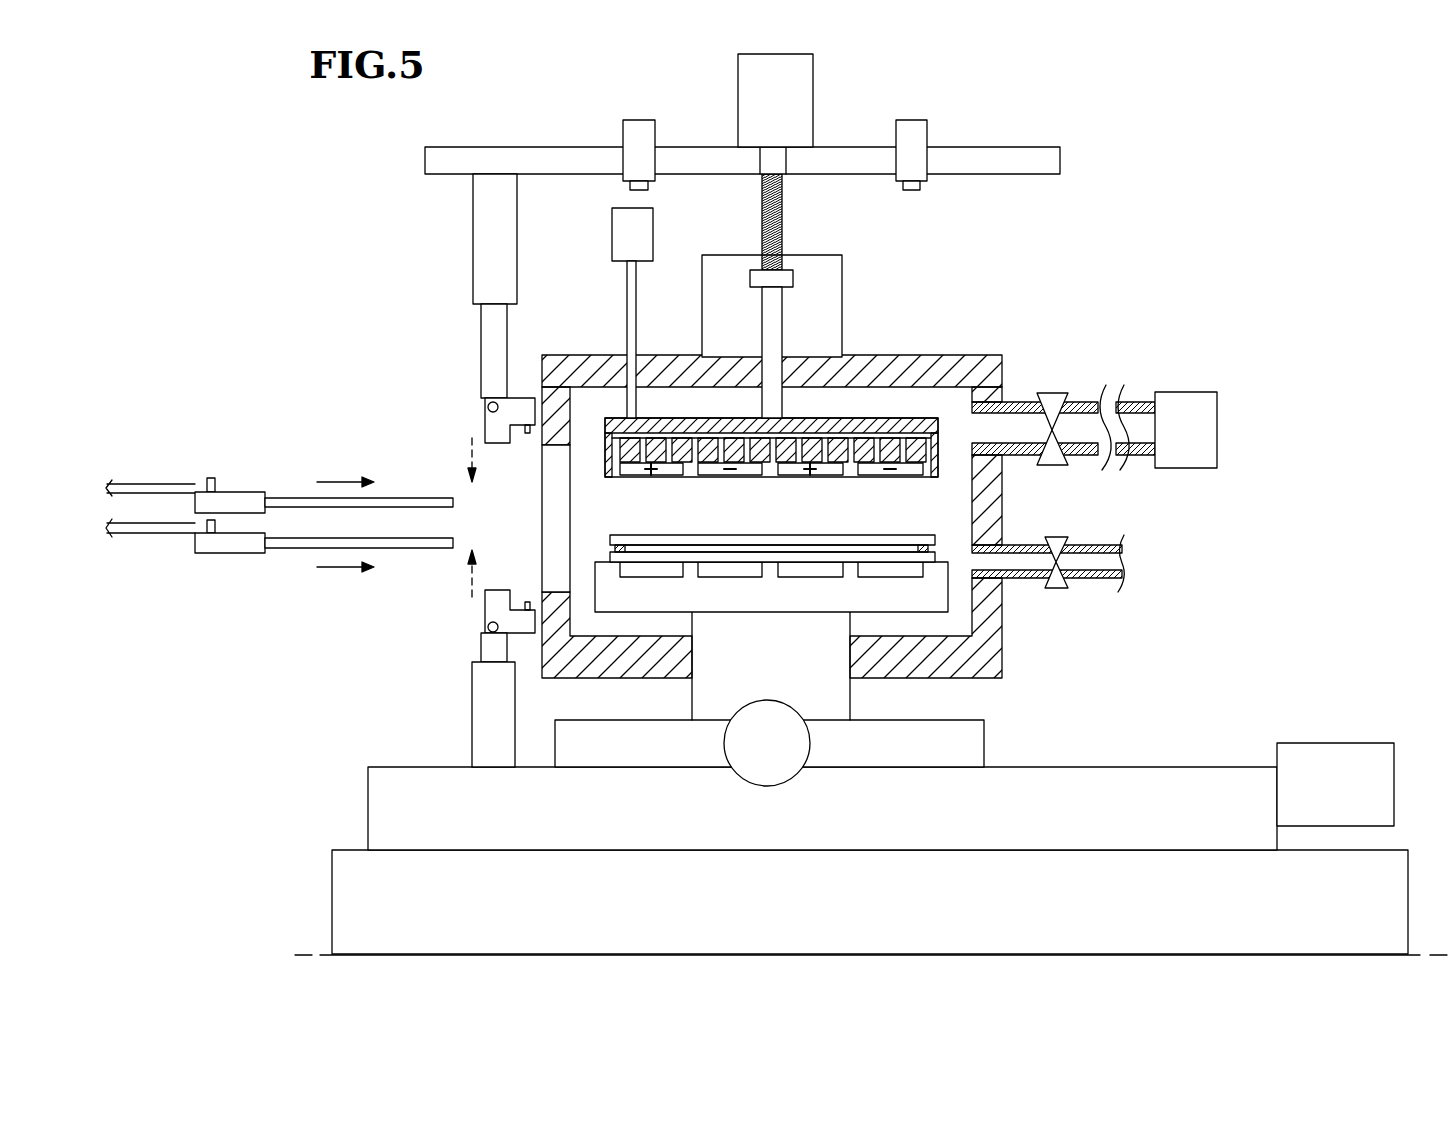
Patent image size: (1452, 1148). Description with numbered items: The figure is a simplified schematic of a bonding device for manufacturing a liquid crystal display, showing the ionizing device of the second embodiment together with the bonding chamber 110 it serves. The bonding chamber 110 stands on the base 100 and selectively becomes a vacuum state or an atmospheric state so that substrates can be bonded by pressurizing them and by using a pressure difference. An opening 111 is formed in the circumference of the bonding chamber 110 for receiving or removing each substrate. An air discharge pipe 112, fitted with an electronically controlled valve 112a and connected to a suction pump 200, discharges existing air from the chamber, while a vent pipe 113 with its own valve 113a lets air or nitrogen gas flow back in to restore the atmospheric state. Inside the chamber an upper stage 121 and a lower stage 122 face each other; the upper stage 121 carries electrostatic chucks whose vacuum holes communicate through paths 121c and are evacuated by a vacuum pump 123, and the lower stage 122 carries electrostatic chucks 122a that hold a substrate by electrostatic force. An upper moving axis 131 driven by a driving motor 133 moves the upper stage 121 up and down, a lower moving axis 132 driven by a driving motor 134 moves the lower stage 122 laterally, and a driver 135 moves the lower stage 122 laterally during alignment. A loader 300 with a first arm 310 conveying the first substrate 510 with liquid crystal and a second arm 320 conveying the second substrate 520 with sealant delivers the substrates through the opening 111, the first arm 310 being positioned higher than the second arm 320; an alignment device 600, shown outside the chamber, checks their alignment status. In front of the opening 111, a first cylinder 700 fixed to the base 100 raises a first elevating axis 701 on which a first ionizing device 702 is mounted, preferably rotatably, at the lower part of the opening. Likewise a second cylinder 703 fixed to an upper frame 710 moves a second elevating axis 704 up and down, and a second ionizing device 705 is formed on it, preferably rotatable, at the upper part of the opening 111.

The base 100 is at (1175, 770).
The bonding chamber 110 is at (662, 352).
The opening 111 is at (553, 523).
The air discharge pipe 112 is at (1137, 455).
The valve 112a is at (1054, 470).
The vent pipe 113 is at (1125, 562).
The valve 113a is at (1058, 590).
The upper stage 121 is at (798, 396).
The paths 121c is at (852, 435).
The lower stage 122 is at (852, 639).
The electrostatic chucks 122a is at (903, 568).
The vacuum pump 123 is at (615, 225).
The upper moving axis 131 is at (772, 310).
The lower moving axis 132 is at (835, 698).
The driving motor 133 is at (798, 88).
The driving motor 134 is at (772, 765).
The driver 135 is at (1353, 757).
The suction pump 200 is at (1217, 432).
The loader 300 is at (279, 494).
The first arm 310 is at (255, 497).
The second arm 320 is at (230, 548).
The first substrate 510 is at (703, 555).
The second substrate 520 is at (853, 545).
The alignment device 600 is at (635, 128).
The first cylinder 700 is at (478, 717).
The first elevating axis 701 is at (490, 650).
The first ionizing device 702 is at (490, 605).
The second cylinder 703 is at (480, 243).
The second elevating axis 704 is at (487, 348).
The second ionizing device 705 is at (490, 432).
The upper frame 710 is at (436, 157).